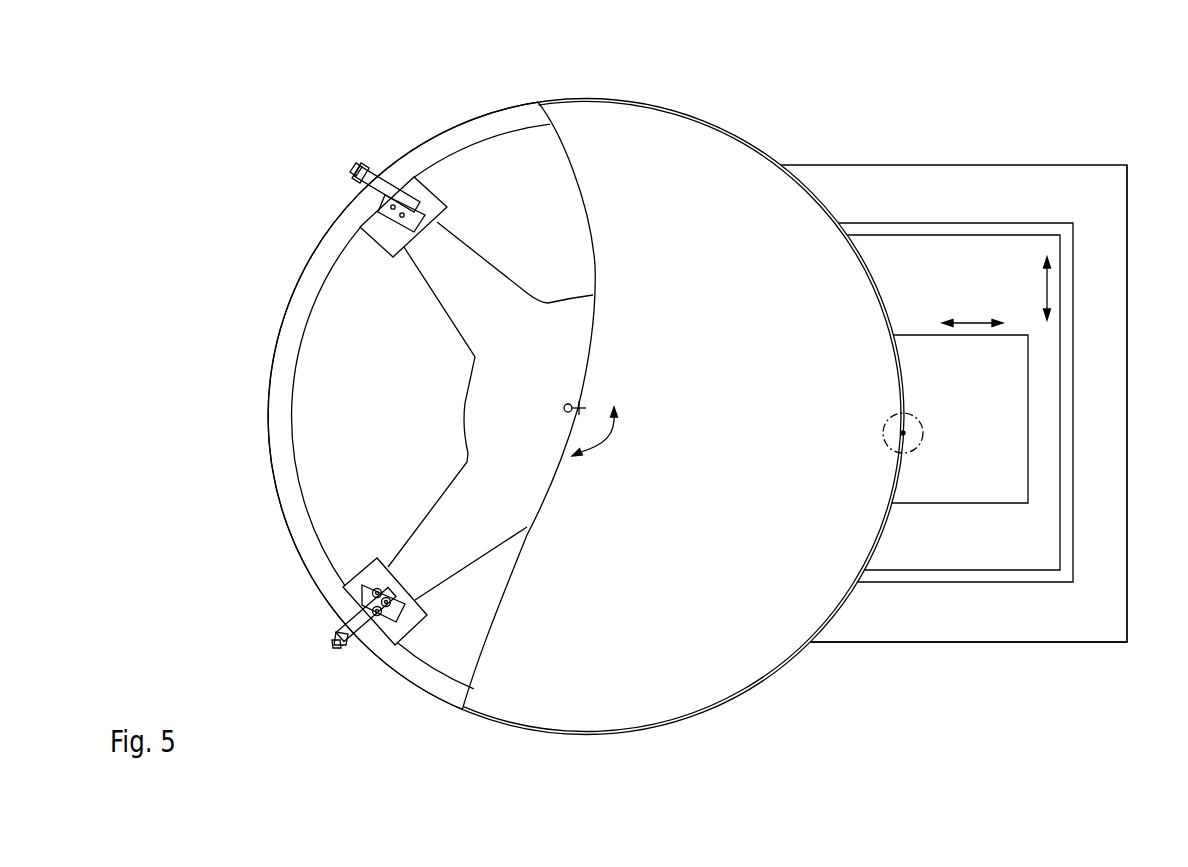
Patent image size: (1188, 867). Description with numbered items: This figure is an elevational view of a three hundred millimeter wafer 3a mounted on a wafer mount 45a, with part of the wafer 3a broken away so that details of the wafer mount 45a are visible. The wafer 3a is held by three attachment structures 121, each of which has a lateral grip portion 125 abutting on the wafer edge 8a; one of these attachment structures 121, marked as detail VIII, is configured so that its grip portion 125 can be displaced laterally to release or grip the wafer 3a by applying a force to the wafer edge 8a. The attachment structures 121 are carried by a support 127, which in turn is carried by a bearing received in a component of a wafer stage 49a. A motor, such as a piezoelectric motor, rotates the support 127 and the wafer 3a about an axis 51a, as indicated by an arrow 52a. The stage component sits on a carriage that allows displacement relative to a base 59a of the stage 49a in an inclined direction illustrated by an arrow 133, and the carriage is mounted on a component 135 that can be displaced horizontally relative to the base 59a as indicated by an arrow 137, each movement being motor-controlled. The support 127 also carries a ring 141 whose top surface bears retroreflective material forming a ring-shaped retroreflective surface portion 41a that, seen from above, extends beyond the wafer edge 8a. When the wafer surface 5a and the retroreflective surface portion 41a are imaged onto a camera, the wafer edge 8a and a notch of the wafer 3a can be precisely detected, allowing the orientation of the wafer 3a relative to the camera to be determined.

The wafer 3a is at (738, 714).
The wafer surface 5a is at (727, 507).
The wafer edge 8a is at (772, 679).
The retroreflective surface portion 41a is at (524, 118).
The wafer mount 45a is at (597, 383).
The wafer stage 49a is at (975, 140).
The axis 51a is at (584, 407).
The arrow 52a is at (610, 437).
The base 59a is at (1047, 643).
The attachment structure 121 is at (358, 153).
The grip portion 125 is at (376, 173).
The support 127 is at (445, 315).
The arrow 133 is at (972, 322).
The component 135 is at (1010, 552).
The arrow 137 is at (1052, 290).
The ring 141 is at (270, 359).
The detail VIII is at (907, 452).